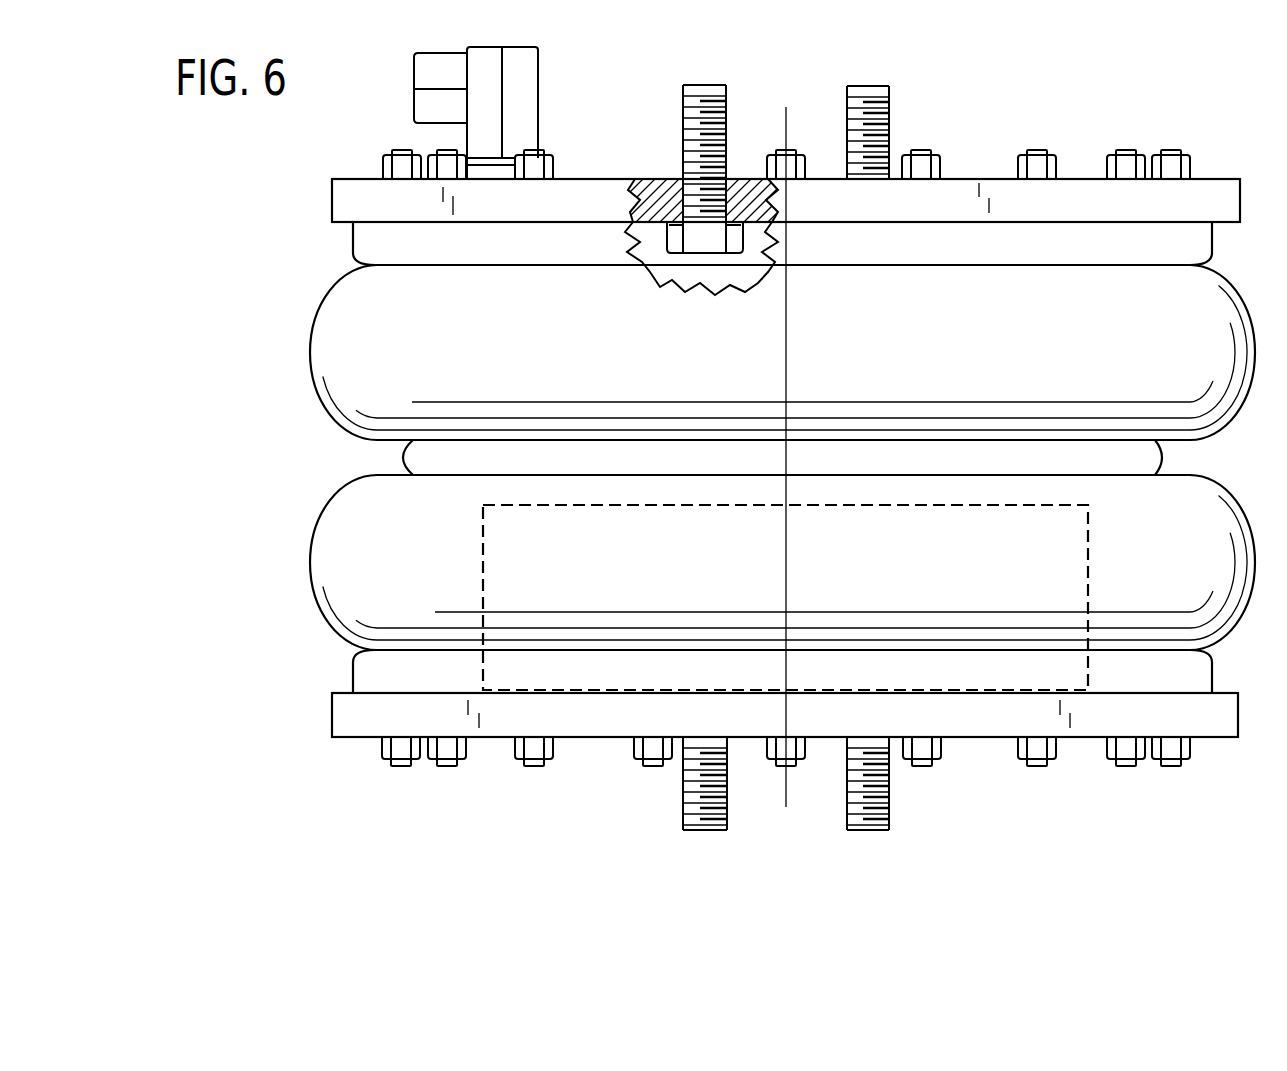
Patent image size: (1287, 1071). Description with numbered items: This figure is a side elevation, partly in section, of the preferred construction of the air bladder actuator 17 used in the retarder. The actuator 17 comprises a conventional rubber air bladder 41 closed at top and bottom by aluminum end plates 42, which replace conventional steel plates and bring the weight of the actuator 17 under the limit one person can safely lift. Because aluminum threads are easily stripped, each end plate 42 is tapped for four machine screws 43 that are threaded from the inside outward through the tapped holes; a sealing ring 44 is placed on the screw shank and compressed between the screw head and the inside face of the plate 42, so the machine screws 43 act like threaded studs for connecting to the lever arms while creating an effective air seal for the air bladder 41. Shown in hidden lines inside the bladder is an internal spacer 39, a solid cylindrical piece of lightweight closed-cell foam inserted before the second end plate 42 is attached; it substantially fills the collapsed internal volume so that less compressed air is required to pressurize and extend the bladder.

The air bladder actuator 17 is at (751, 457).
The internal spacer 39 is at (1088, 570).
The rubber air bladder 41 is at (327, 363).
The aluminum end plates 42 is at (480, 207).
The machine screws 43 is at (703, 247).
The sealing ring 44 is at (675, 228).